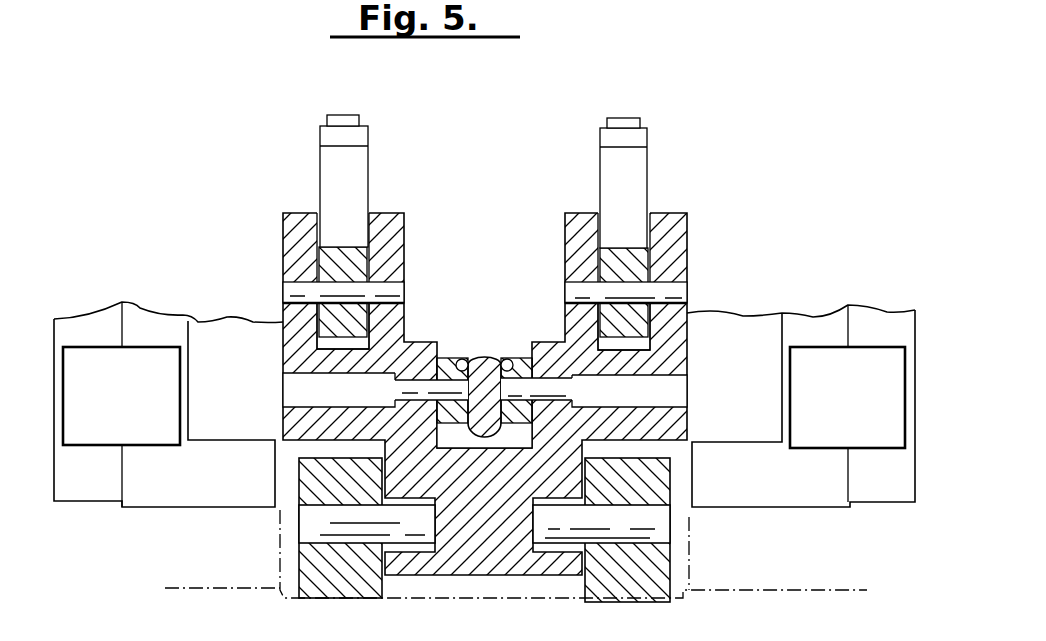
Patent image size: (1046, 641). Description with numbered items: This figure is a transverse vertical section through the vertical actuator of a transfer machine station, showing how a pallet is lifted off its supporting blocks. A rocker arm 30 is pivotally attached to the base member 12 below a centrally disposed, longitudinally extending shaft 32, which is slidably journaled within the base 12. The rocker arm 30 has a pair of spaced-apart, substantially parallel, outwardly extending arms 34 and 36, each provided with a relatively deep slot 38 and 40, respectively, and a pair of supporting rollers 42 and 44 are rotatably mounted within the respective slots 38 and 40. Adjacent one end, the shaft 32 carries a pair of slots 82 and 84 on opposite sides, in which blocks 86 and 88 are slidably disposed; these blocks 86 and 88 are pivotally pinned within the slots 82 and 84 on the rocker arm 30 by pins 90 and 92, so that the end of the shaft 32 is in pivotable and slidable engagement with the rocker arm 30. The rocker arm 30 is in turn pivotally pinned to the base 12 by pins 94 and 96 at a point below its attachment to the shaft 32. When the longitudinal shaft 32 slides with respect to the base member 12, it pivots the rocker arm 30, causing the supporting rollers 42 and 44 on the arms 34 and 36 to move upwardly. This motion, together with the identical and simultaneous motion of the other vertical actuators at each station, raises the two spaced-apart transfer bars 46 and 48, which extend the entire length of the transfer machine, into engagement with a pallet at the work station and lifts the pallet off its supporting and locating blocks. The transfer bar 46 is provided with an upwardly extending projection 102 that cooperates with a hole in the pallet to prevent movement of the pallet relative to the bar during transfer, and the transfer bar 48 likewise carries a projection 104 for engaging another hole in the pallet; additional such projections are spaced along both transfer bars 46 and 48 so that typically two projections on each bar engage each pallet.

The base member 12 is at (738, 508).
The rocker arm 30 is at (480, 577).
The longitudinal shaft 32 is at (485, 357).
The outwardly extending arm 34 is at (675, 362).
The outwardly extending arm 36 is at (292, 361).
The slot 38 is at (652, 344).
The slot 40 is at (327, 337).
The supporting roller 42 is at (635, 270).
The supporting roller 44 is at (357, 263).
The transfer bar 46 is at (352, 168).
The transfer bar 48 is at (631, 170).
The slot 82 is at (462, 359).
The slot 84 is at (507, 359).
The block 86 is at (440, 357).
The block 88 is at (522, 358).
The pin 90 is at (393, 387).
The pin 92 is at (567, 390).
The pin 94 is at (322, 525).
The pin 96 is at (563, 537).
The projection 102 is at (348, 122).
The projection 104 is at (632, 122).